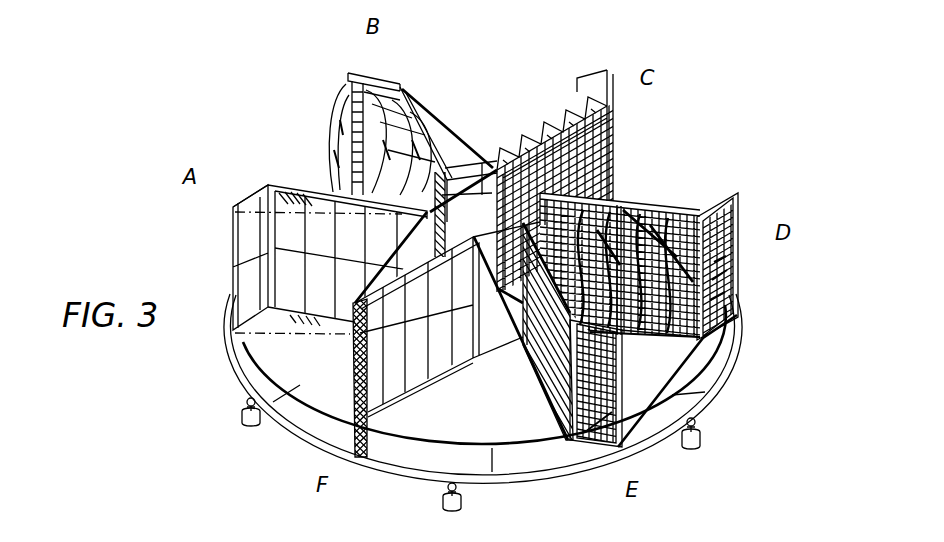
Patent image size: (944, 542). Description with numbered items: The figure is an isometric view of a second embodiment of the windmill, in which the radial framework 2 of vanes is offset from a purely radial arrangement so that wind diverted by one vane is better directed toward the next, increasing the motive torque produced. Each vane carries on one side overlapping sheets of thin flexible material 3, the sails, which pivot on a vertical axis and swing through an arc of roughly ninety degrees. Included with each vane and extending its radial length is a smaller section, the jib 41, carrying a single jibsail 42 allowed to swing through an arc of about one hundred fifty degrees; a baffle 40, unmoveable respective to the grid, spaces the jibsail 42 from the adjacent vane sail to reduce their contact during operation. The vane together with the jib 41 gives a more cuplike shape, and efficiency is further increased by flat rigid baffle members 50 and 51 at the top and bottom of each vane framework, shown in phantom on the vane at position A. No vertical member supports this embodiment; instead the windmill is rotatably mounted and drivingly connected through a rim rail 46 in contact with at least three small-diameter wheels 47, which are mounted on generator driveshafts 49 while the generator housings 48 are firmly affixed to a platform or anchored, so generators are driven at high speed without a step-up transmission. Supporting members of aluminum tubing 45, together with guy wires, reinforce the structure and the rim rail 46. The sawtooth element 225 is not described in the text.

The radial framework 2 is at (418, 380).
The sheets of thin flexible material 3 is at (393, 378).
The baffle 40 is at (398, 88).
The jib 41 is at (383, 80).
The jibsail 42 is at (340, 117).
The aluminum tubing 45 is at (450, 128).
The rim rail 46 is at (562, 474).
The wheels 47 is at (698, 421).
The generator housings 48 is at (703, 436).
The generator driveshafts 49 is at (688, 428).
The flat rigid baffle member 50 is at (270, 195).
The flat rigid baffle member 51 is at (293, 333).
The sawtooth rack 225 is at (597, 90).